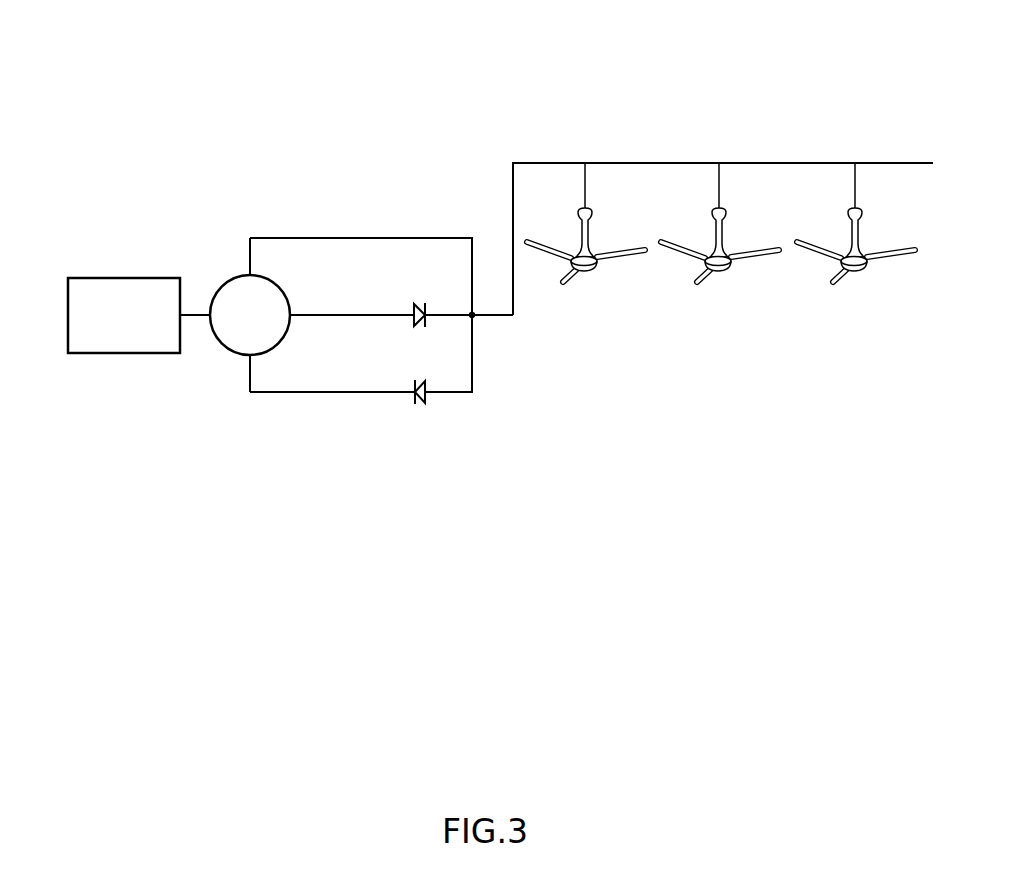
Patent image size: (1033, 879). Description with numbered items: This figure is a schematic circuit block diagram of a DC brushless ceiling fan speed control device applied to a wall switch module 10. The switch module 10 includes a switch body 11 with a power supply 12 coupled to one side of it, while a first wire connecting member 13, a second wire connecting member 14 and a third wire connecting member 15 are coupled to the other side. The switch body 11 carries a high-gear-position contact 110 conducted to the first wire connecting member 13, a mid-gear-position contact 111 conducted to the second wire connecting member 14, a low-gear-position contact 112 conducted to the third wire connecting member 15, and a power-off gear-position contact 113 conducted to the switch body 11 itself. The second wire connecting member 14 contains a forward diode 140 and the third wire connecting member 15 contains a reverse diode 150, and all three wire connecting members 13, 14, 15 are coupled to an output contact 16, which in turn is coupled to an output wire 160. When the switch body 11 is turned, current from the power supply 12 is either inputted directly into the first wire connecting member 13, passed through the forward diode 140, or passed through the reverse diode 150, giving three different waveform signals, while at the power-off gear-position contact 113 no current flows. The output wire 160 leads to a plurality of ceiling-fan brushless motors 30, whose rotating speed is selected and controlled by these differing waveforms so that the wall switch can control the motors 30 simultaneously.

The switch module 10 is at (275, 413).
The switch body 11 is at (226, 337).
The power supply 12 is at (124, 278).
The first wire connecting member 13 is at (362, 238).
The second wire connecting member 14 is at (353, 317).
The third wire connecting member 15 is at (330, 393).
The output contact 16 is at (472, 312).
The ceiling-fan brushless motor 30 is at (568, 226).
The high-gear-position contact 110 is at (248, 272).
The mid-gear-position contact 111 is at (291, 312).
The low-gear-position contact 112 is at (248, 358).
The power-off gear-position contact 113 is at (207, 308).
The forward diode 140 is at (421, 305).
The reverse diode 150 is at (420, 410).
The output wire 160 is at (496, 313).